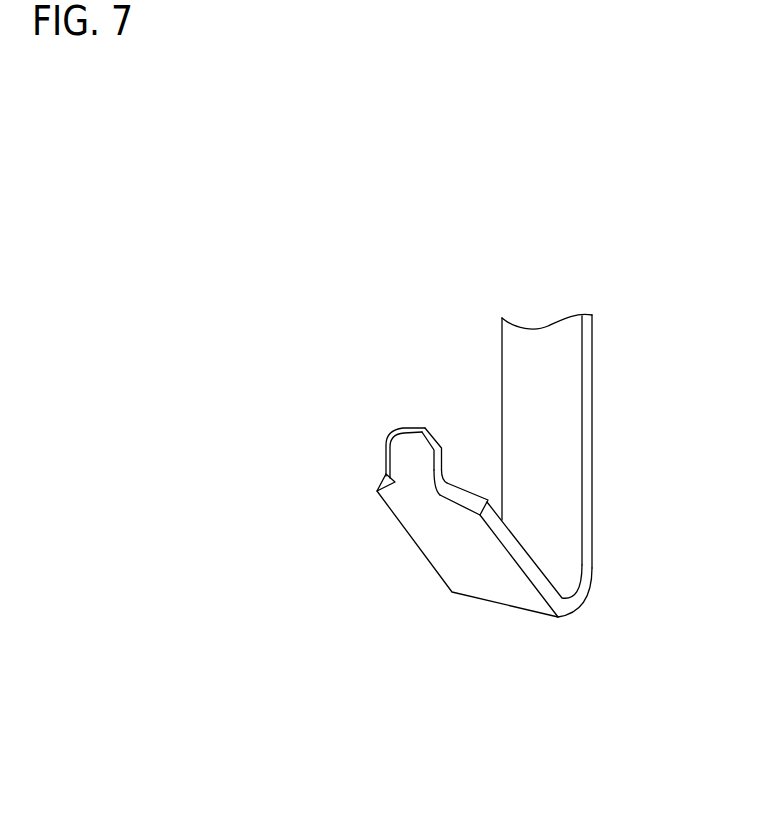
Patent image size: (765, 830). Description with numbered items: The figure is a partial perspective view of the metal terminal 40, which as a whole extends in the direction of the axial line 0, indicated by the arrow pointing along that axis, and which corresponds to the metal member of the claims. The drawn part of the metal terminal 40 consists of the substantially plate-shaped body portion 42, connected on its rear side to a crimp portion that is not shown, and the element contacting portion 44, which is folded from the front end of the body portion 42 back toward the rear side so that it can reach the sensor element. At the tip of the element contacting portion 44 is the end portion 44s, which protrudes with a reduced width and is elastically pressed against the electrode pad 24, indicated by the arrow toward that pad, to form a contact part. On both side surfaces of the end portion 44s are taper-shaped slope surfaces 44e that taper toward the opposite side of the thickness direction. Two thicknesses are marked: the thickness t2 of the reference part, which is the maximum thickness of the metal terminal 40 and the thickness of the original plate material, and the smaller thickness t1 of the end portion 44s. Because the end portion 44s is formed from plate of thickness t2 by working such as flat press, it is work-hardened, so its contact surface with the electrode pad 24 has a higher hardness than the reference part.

The metal terminal 40 is at (461, 403).
The body portion 42 is at (518, 360).
The element contacting portion 44 is at (472, 524).
The slope surfaces 44e is at (433, 460).
The end portion 44s is at (408, 463).
The thickness of the end portion t1 is at (453, 423).
The thickness of the reference part t2 is at (558, 393).
The electrode pad 24 is at (325, 470).
The axial line 0 is at (503, 715).